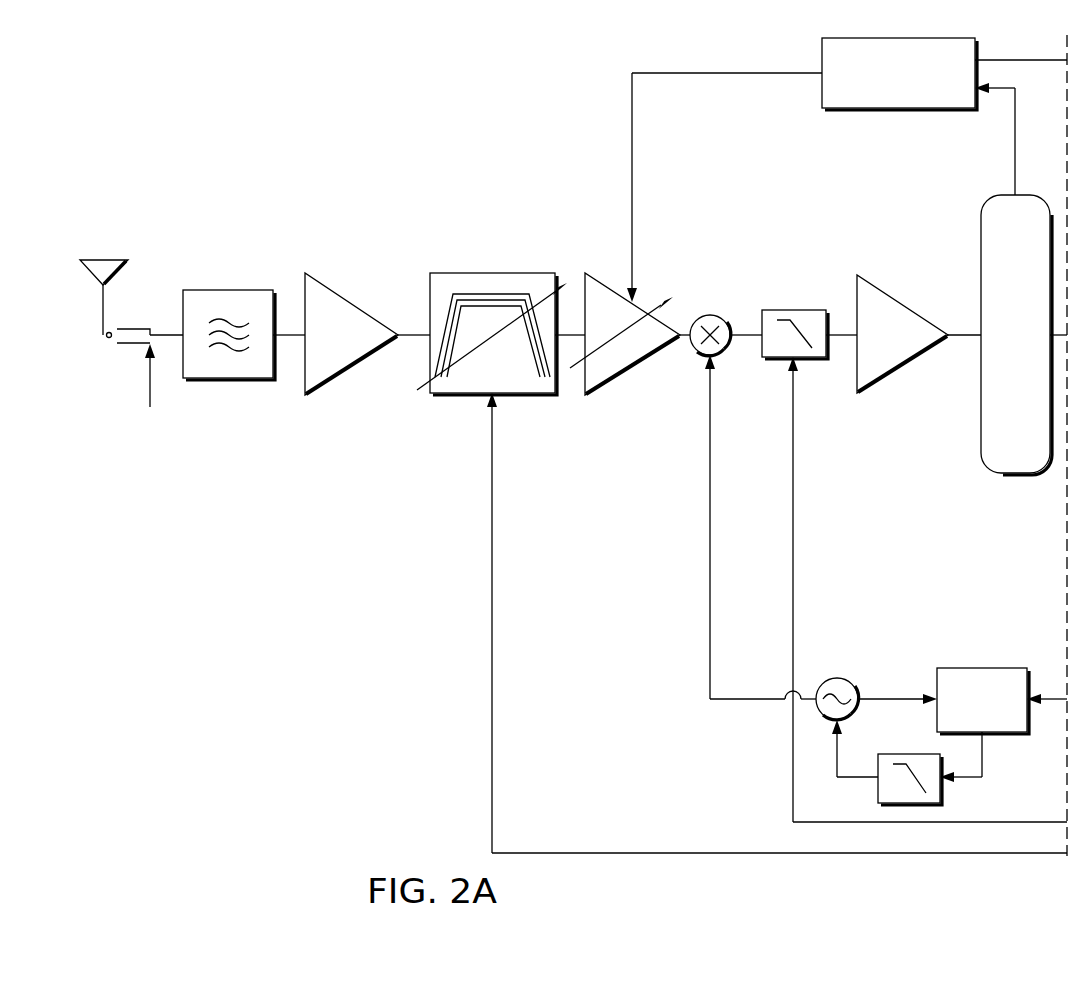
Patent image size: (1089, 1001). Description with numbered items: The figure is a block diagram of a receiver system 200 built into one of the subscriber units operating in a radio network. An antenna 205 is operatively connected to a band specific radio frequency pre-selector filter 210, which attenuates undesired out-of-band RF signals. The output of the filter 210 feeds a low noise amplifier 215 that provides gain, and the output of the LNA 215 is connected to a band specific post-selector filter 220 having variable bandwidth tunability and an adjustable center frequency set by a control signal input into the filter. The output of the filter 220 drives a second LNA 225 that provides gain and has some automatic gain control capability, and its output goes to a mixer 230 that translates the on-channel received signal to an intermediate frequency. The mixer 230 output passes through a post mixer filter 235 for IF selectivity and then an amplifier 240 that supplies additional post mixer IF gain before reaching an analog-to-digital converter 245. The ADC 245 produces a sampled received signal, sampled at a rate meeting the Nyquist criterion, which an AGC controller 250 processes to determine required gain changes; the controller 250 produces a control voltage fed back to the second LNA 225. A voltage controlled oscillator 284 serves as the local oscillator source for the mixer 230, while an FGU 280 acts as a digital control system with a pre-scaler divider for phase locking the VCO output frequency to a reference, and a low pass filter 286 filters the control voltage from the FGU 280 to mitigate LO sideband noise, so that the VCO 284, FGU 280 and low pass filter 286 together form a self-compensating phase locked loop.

The receiver system 200 is at (276, 198).
The antenna 205 is at (102, 318).
The band specific radio frequency pre-selector filter 210 is at (228, 290).
The low noise amplifier 215 is at (325, 282).
The band specific post-selector filter 220 is at (492, 273).
The second LNA 225 is at (635, 370).
The mixer 230 is at (710, 315).
The post mixer filter 235 is at (793, 310).
The amplifier 240 is at (873, 282).
The analog-to-digital converter 245 is at (981, 248).
The AGC controller 250 is at (822, 57).
The FGU 280 is at (982, 668).
The voltage controlled oscillator 284 is at (837, 680).
The low pass filter 286 is at (878, 795).